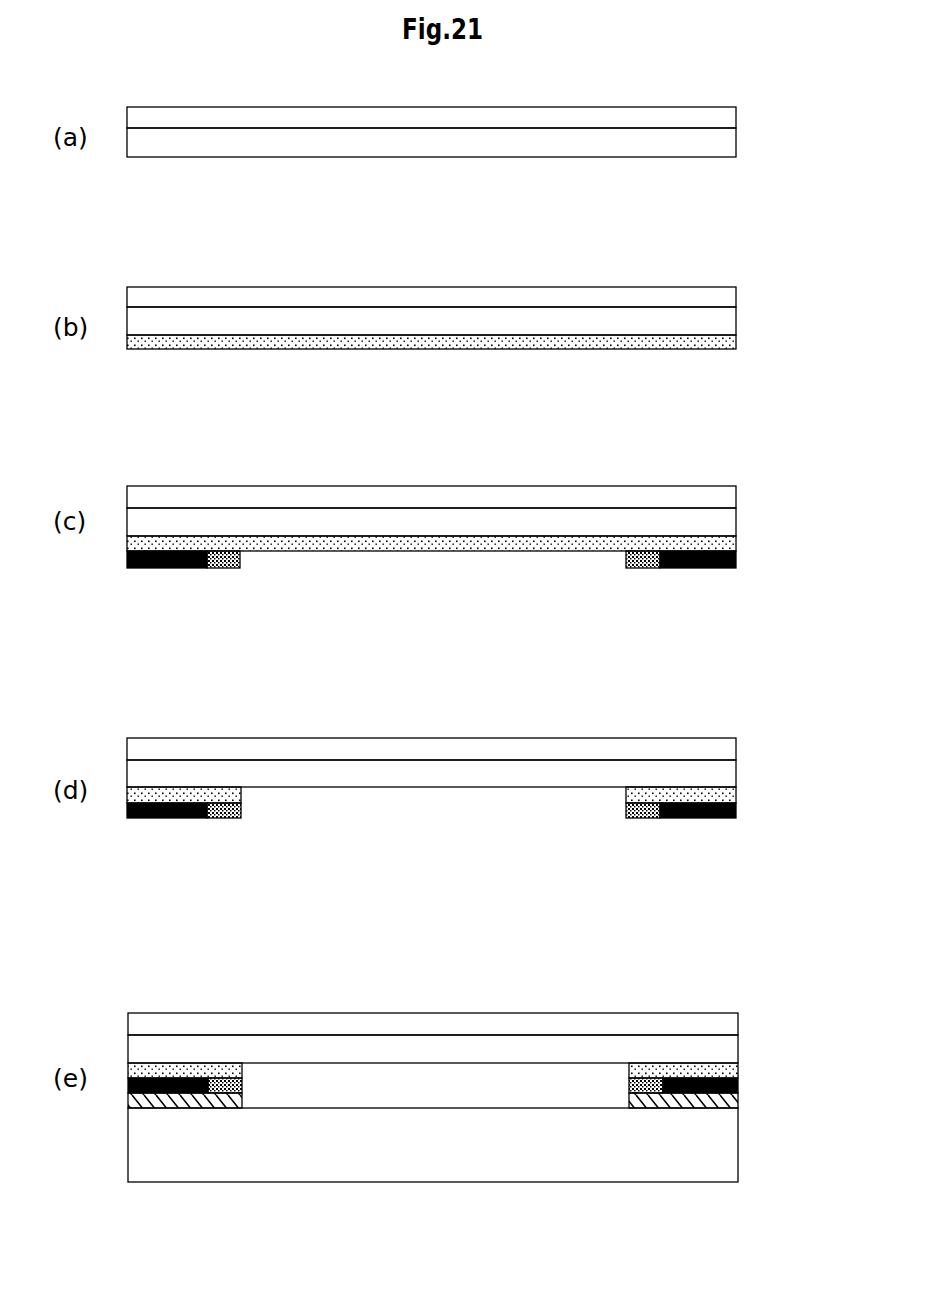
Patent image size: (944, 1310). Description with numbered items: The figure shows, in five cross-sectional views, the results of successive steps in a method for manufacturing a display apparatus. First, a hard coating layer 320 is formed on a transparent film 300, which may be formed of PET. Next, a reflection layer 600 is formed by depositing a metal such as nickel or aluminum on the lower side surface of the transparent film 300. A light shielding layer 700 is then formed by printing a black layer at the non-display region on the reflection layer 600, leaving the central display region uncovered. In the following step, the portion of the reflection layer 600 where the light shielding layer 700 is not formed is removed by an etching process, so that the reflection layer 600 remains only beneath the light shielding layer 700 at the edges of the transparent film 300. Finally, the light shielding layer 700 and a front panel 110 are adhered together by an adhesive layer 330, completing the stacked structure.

The hard coating layer 320 is at (736, 118).
The transparent film 300 is at (736, 147).
The reflection layer 600 is at (736, 347).
The light shielding layer 700 is at (698, 568).
The adhesive layer 330 is at (715, 1108).
The front panel 110 is at (530, 1172).